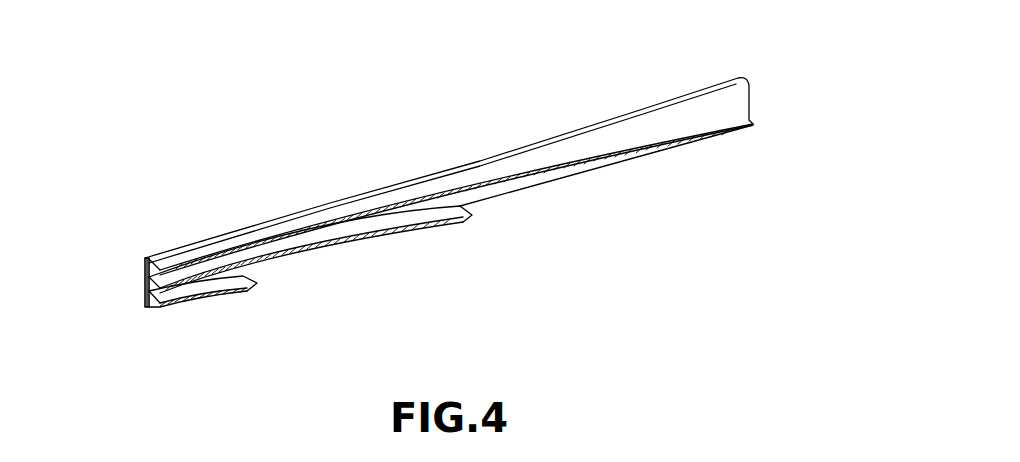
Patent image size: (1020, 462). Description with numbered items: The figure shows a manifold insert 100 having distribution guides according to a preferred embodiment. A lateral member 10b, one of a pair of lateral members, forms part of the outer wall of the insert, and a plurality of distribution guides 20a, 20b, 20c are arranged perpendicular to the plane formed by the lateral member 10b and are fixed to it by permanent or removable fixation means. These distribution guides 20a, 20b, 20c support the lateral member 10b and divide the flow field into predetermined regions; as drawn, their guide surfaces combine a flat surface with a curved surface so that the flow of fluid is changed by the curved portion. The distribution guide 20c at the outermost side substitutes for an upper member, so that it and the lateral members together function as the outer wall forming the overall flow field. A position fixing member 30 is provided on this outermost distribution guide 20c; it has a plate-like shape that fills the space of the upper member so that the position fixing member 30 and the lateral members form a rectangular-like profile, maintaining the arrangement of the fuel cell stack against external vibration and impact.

The manifold insert having distribution guides 100 is at (453, 233).
The lateral member 10b is at (143, 283).
The distribution guide 20a is at (217, 295).
The distribution guide 20b is at (393, 233).
The distribution guide at the outermost side 20c is at (555, 167).
The position fixing member 30 is at (728, 102).